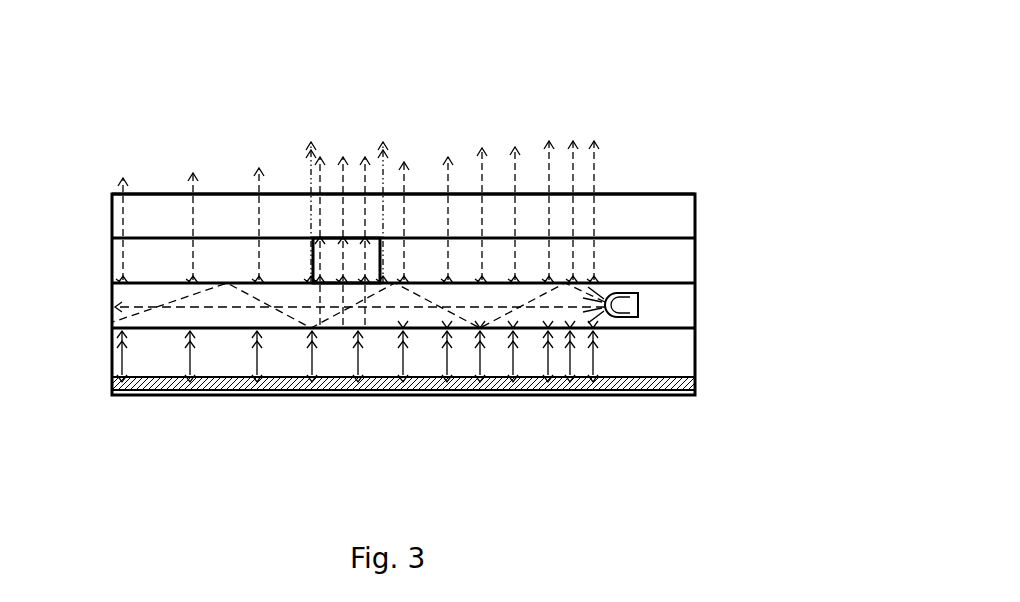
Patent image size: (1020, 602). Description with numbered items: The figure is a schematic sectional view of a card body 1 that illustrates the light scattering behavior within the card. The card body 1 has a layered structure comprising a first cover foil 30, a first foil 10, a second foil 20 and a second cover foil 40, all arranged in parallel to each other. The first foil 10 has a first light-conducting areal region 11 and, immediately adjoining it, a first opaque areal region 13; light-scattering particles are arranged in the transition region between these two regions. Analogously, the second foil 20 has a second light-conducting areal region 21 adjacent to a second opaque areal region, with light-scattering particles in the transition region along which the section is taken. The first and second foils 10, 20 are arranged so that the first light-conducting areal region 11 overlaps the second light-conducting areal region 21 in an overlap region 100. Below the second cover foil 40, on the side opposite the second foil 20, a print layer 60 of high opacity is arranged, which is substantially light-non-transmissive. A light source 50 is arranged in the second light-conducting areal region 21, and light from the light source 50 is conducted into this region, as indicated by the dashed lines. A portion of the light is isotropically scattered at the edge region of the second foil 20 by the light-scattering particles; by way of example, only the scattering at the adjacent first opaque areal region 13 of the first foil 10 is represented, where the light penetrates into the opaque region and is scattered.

The card body 1 is at (95, 82).
The first foil 10 is at (714, 248).
The first light-conducting areal region 11 is at (313, 258).
The first opaque areal region 13 is at (658, 258).
The second foil 20 is at (673, 308).
The second light-conducting areal region 21 is at (458, 303).
The first cover foil 30 is at (655, 207).
The second cover foil 40 is at (653, 355).
The light source 50 is at (643, 305).
The print layer 60 is at (573, 388).
The overlap region 100 is at (303, 302).